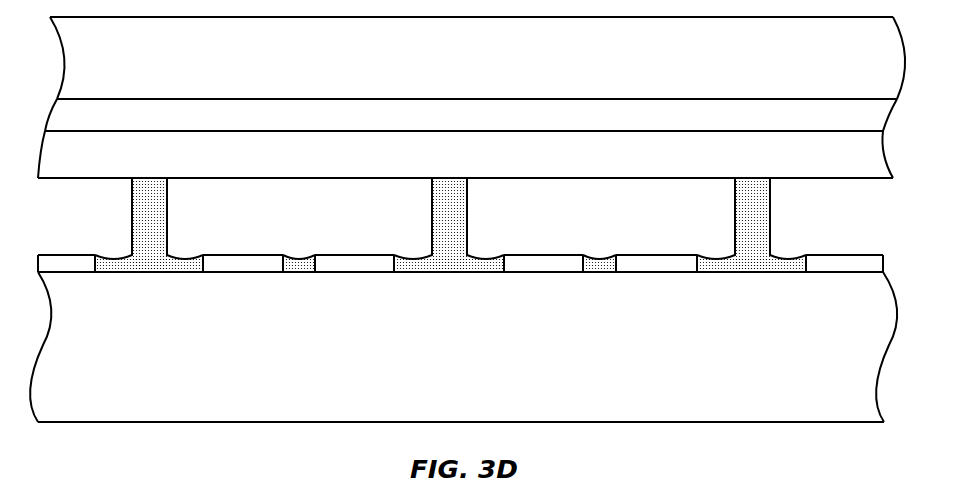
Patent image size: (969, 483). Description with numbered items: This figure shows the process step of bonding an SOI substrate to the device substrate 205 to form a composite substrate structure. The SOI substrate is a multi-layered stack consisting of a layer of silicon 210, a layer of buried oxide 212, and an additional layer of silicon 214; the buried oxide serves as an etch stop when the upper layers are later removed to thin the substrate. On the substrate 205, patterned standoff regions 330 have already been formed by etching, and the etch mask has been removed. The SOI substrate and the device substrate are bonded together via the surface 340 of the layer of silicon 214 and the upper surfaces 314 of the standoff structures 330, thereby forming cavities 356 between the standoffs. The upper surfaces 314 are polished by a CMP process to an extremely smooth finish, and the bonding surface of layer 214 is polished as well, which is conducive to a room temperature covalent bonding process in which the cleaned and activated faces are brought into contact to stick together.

The substrate 205 is at (825, 400).
The layer of silicon 210 is at (819, 75).
The layer of buried oxide 212 is at (819, 127).
The layer of silicon 214 is at (819, 162).
The upper surface of the standoff structures 314 is at (153, 178).
The standoff regions 330 is at (748, 208).
The surface of layer 214 340 is at (278, 179).
The cavities 356 is at (620, 220).